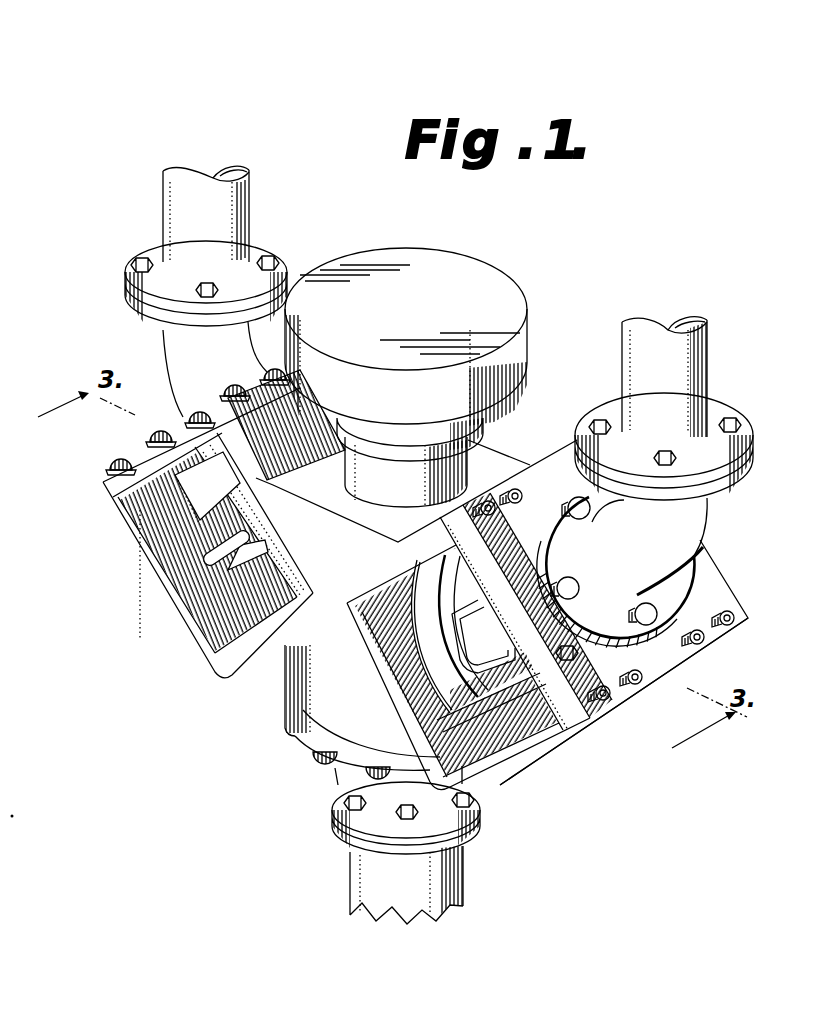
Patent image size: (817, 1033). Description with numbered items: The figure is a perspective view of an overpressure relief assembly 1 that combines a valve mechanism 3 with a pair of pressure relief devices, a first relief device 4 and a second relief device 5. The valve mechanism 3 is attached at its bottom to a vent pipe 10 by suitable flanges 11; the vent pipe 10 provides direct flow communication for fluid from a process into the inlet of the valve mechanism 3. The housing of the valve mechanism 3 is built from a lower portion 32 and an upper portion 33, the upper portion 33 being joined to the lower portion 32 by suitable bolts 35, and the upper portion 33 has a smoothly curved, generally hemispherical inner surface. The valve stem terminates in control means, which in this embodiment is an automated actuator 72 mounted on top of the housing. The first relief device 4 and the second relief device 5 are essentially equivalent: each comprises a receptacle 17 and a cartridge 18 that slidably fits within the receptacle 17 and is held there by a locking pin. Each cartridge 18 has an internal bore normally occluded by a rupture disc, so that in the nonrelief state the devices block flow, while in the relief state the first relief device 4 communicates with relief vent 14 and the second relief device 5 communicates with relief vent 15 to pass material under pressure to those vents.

The overpressure relief assembly 1 is at (545, 779).
The valve mechanism 3 is at (285, 707).
The first relief device 4 is at (172, 603).
The second relief device 5 is at (731, 587).
The vent pipe 10 is at (466, 881).
The flanges 11 is at (333, 833).
The relief vent 14 is at (165, 211).
The relief vent 15 is at (712, 366).
The receptacle 17 is at (128, 524).
The cartridge 18 is at (172, 518).
The lower portion 32 is at (350, 765).
The upper portion 33 is at (305, 680).
The bolts 35 is at (308, 747).
The automated actuator 72 is at (433, 251).